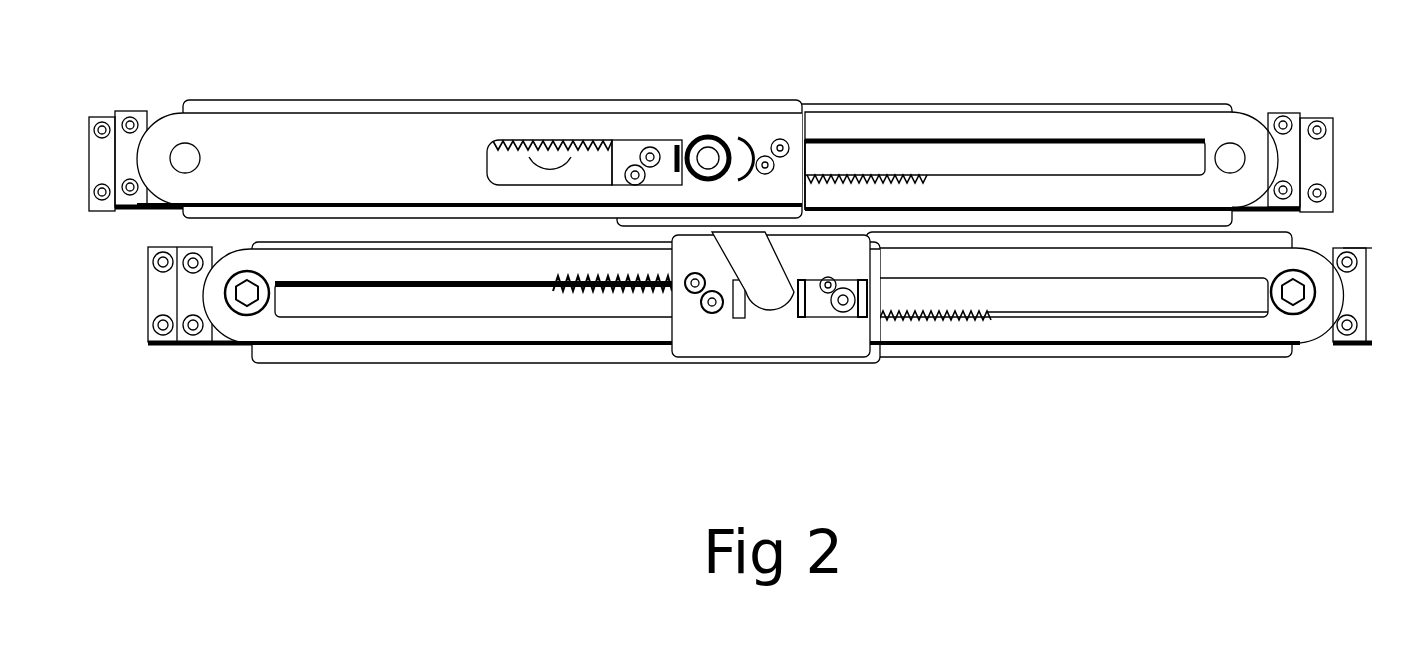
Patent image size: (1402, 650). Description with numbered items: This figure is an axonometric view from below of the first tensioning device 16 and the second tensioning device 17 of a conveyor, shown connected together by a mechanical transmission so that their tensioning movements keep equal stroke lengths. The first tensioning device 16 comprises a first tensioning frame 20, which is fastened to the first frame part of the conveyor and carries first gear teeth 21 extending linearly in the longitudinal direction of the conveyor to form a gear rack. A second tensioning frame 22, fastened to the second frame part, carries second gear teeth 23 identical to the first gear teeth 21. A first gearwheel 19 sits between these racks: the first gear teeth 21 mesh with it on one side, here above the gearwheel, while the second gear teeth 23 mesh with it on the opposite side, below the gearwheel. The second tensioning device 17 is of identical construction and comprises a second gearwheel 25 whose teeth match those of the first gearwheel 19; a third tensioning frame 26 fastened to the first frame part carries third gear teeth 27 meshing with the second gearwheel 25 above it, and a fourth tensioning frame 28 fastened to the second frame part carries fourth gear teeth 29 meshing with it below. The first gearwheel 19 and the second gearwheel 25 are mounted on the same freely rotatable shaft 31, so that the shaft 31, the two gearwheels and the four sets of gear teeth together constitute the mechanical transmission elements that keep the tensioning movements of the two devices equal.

The first tensioning device 16 is at (711, 118).
The second tensioning device 17 is at (760, 353).
The first gearwheel 19 is at (757, 157).
The first tensioning frame 20 is at (469, 125).
The first gear teeth 21 is at (527, 140).
The second tensioning frame 22 is at (947, 132).
The second gear teeth 23 is at (855, 178).
The second gearwheel 25 is at (771, 338).
The third tensioning frame 26 is at (541, 353).
The third gear teeth 27 is at (617, 290).
The fourth tensioning frame 28 is at (1075, 340).
The fourth gear teeth 29 is at (945, 302).
The shaft 31 is at (763, 287).